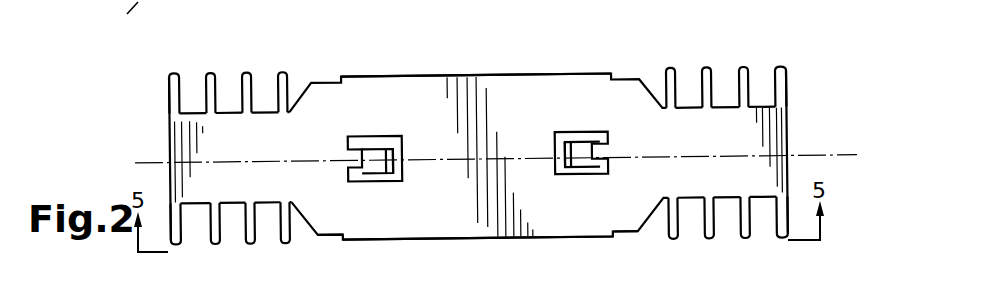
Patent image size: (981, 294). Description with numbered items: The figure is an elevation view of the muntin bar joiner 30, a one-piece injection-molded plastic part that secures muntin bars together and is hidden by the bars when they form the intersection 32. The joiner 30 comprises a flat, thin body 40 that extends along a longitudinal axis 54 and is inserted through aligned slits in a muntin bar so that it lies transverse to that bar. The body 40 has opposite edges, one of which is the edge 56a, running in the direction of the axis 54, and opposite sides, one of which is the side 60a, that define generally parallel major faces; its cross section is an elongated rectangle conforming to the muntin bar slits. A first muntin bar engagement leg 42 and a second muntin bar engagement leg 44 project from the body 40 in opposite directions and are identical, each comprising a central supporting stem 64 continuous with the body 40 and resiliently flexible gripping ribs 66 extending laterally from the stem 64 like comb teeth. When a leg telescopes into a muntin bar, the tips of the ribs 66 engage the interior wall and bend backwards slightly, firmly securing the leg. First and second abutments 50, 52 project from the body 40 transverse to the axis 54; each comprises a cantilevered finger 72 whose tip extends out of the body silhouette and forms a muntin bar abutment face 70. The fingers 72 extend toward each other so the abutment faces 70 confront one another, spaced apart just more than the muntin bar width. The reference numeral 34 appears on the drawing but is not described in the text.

The muntin bar joiner 30 is at (478, 70).
The intersection 32 is at (378, 263).
The second side 34 is at (576, 262).
The body 40 is at (518, 108).
The first muntin bar engagement leg 42 is at (153, 126).
The second muntin bar engagement leg 44 is at (795, 108).
The first abutment 50 is at (369, 138).
The second abutment 52 is at (579, 172).
The longitudinal axis 54 is at (830, 155).
The edge 56a is at (373, 77).
The side 60a is at (405, 207).
The central supporting stem 64 is at (253, 183).
The gripping ribs 66 is at (247, 94).
The muntin bar abutment face 70 is at (400, 157).
The cantilevered finger 72 is at (360, 158).